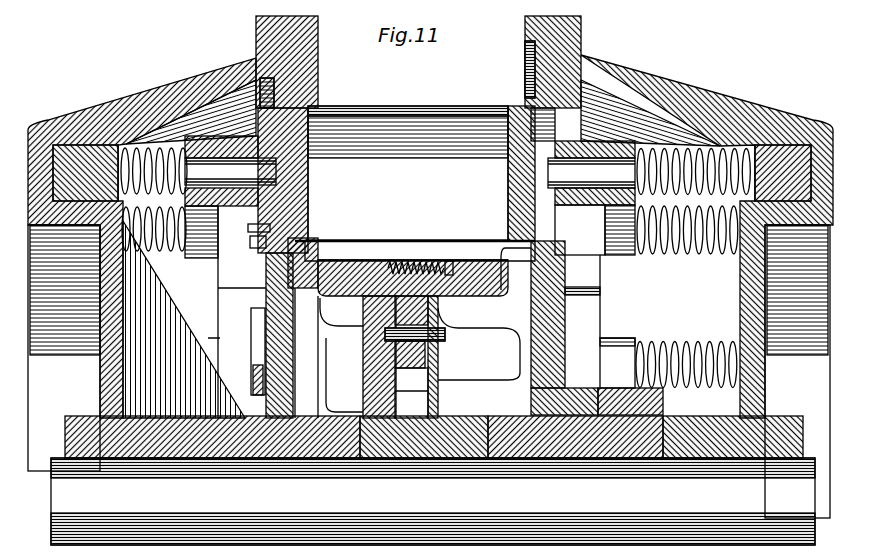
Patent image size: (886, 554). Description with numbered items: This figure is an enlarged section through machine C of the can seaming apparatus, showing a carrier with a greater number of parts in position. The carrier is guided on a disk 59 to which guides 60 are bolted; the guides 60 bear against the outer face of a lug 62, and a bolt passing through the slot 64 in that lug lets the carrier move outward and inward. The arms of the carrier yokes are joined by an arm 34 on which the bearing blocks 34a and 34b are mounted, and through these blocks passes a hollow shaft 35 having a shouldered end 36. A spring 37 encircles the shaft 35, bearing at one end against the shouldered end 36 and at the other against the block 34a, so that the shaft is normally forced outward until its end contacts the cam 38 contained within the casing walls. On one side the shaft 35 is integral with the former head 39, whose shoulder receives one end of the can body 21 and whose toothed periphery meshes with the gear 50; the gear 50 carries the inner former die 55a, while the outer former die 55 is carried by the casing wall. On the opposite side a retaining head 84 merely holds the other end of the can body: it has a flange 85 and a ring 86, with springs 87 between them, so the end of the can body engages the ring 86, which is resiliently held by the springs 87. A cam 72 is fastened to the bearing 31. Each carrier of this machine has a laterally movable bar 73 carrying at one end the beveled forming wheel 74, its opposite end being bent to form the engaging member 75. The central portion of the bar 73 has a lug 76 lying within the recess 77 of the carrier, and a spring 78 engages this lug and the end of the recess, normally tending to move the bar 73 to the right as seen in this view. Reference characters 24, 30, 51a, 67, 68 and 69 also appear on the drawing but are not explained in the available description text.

The can body 21 is at (411, 98).
The piston head 24 is at (300, 157).
The shaft 30 is at (380, 517).
The bearing 31 is at (603, 437).
The arm 34 is at (180, 132).
The bearing block 34a is at (678, 132).
The bearing block 34b is at (630, 90).
The hollow shaft 35 is at (310, 143).
The shouldered end 36 is at (110, 130).
The spring 37 is at (133, 140).
The cam 38 is at (63, 140).
The former head 39 is at (298, 100).
The gear 50 is at (260, 293).
The retainer 51a is at (182, 88).
The outer former die 55 is at (310, 43).
The inner former die 55a is at (307, 297).
The disk 59 is at (363, 397).
The guide 60 is at (427, 353).
The lug 62 is at (407, 307).
The slot 64 is at (393, 362).
The bolt 67 is at (253, 230).
The nut 68 is at (262, 217).
The flange 69 is at (300, 230).
The cam 72 is at (537, 377).
The bar 73 is at (430, 243).
The beveled forming wheel 74 is at (330, 240).
The engaging member 75 is at (479, 344).
The lug 76 is at (433, 253).
The recess 77 is at (437, 253).
The spring 78 is at (393, 253).
The retaining head 84 is at (592, 53).
The flange 85 is at (520, 90).
The ring 86 is at (513, 97).
The spring 87 is at (513, 100).